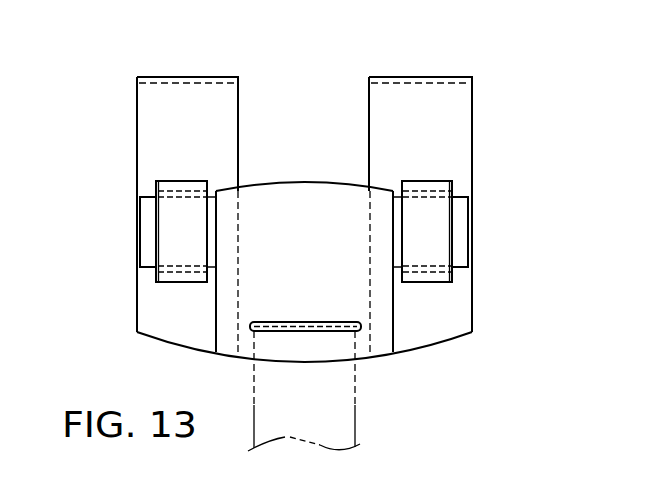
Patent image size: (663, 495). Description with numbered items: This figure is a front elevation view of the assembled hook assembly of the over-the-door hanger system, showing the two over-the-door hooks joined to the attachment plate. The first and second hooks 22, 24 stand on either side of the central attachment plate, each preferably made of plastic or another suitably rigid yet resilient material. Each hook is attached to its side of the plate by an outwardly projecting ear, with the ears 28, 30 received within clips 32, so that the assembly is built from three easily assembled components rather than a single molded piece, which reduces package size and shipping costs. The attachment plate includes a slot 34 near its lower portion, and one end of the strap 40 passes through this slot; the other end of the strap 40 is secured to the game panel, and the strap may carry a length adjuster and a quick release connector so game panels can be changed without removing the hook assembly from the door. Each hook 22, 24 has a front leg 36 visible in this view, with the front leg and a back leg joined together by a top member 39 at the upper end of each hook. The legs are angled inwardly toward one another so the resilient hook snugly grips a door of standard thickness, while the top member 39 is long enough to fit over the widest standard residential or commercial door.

The first hook 22 is at (137, 108).
The second hook 24 is at (473, 115).
The ear 28 is at (146, 233).
The ear 30 is at (462, 228).
The clip 32 is at (176, 181).
The slot 34 is at (302, 321).
The front leg 36 is at (182, 332).
The top member 39 is at (185, 77).
The strap 40 is at (347, 415).